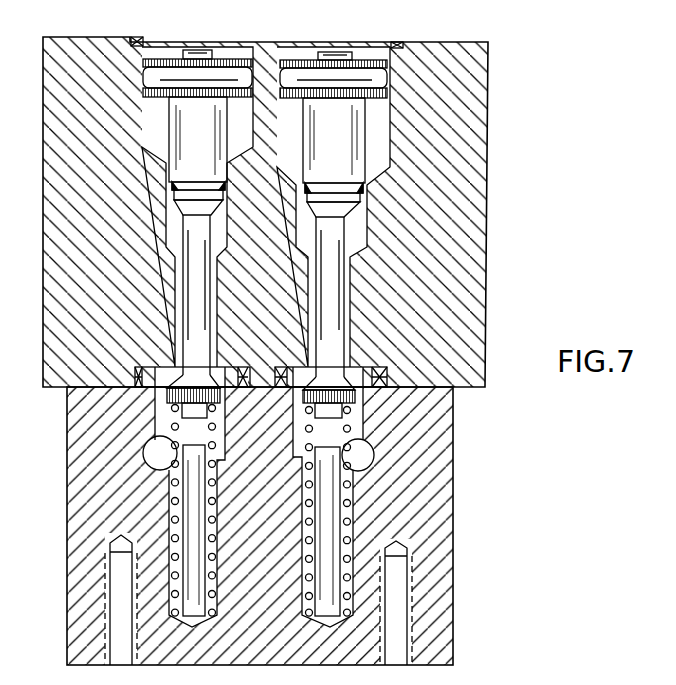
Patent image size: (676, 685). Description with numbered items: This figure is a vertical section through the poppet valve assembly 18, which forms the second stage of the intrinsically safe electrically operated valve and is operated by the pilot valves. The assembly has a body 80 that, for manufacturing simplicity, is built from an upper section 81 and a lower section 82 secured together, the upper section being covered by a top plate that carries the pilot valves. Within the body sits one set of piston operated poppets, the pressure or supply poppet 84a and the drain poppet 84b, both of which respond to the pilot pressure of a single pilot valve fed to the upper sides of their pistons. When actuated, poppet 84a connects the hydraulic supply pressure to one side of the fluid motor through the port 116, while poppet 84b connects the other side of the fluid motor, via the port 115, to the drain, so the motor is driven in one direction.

The poppet valve assembly 18 is at (522, 98).
The body 80 is at (487, 285).
The upper section 81 is at (467, 198).
The lower section 82 is at (438, 515).
The pressure or supply poppet 84a is at (170, 58).
The drain poppet 84b is at (308, 55).
The port 115 is at (370, 458).
The port 116 is at (153, 458).